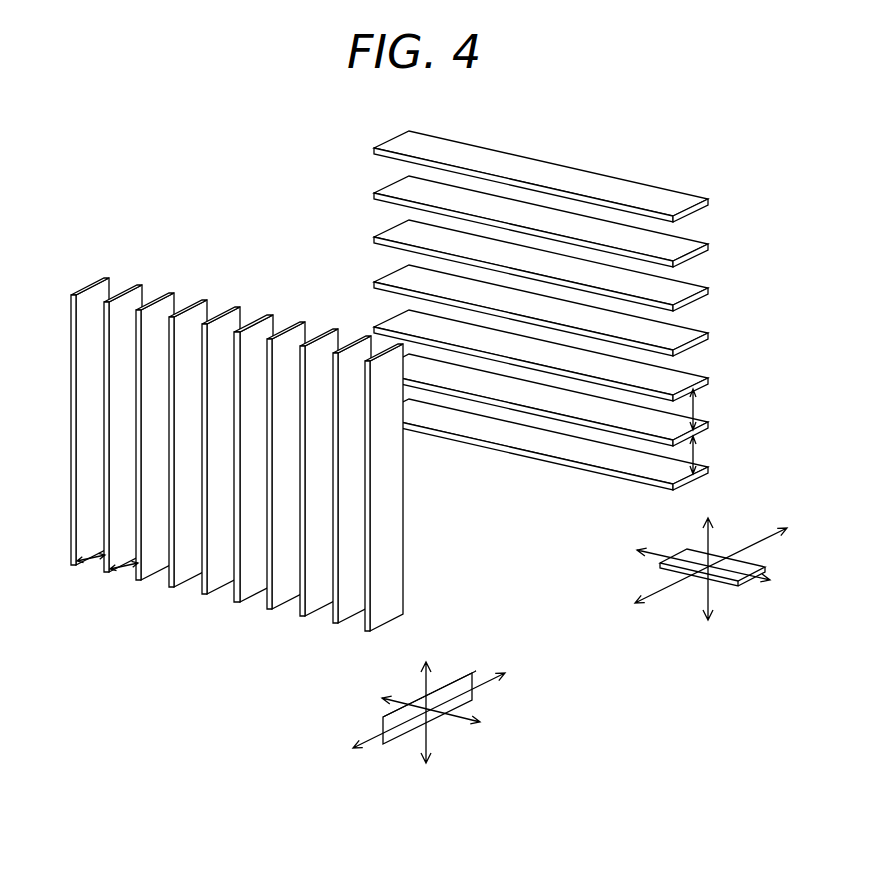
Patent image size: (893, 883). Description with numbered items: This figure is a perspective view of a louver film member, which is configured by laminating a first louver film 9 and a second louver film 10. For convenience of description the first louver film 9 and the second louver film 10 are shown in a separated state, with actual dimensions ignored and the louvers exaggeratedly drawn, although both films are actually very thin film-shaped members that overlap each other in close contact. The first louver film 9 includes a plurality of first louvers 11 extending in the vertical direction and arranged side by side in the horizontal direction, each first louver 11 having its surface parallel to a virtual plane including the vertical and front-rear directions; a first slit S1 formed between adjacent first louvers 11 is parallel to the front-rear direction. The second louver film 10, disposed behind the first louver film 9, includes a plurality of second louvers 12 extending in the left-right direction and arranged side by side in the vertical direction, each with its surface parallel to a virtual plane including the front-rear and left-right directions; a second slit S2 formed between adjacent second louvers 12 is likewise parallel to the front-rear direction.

The first louver film 9 is at (237, 452).
The second louver film 10 is at (505, 282).
The first louver 11 is at (313, 592).
The second louver 12 is at (390, 236).
The first slit S1 is at (106, 575).
The second slit S2 is at (706, 431).